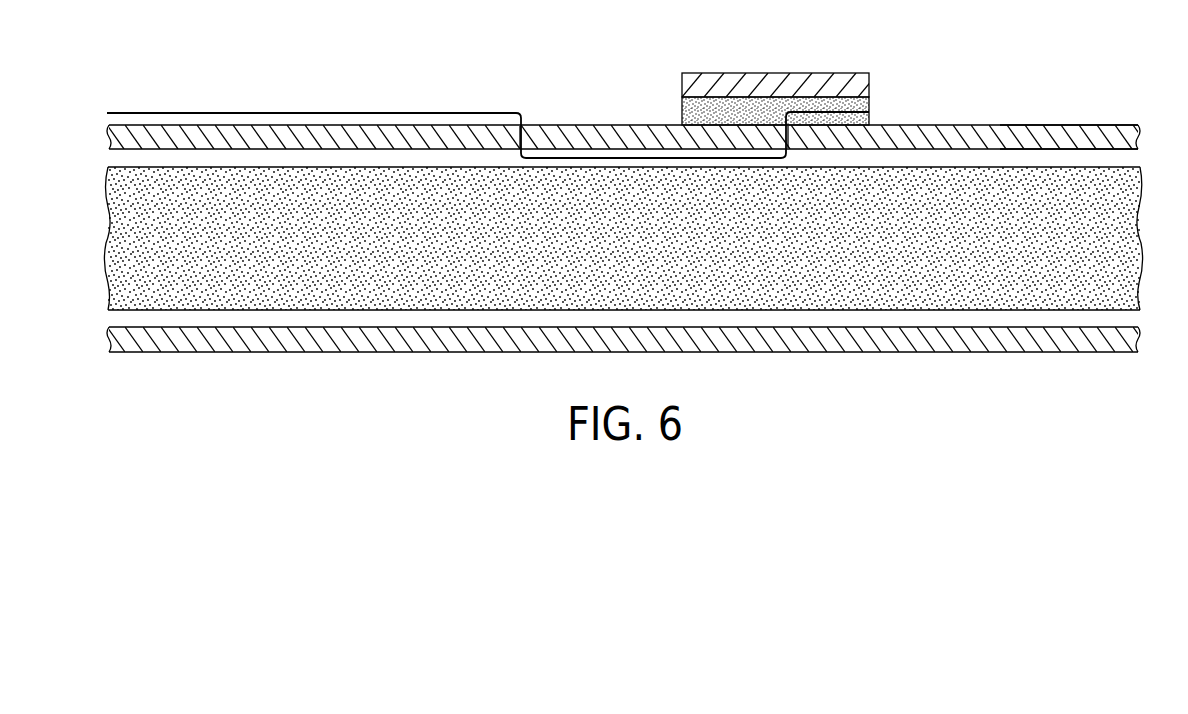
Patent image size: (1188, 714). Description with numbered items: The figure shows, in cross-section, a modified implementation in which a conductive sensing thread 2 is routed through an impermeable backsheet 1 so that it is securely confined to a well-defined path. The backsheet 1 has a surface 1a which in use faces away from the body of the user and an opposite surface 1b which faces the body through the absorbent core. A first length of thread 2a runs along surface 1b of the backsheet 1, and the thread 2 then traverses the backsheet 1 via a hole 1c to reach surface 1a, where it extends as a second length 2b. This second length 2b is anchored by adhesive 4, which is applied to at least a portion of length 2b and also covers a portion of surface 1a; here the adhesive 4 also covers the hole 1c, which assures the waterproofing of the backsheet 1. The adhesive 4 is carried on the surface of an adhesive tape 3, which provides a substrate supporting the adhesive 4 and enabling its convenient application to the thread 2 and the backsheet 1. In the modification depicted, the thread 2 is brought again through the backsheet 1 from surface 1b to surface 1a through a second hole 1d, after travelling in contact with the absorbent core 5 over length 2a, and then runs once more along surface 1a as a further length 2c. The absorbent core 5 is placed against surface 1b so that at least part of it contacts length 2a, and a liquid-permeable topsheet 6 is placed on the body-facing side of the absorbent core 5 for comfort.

The impermeable backsheet 1 is at (337, 140).
The surface 1a is at (1110, 124).
The surface 1b is at (1133, 149).
The hole 1c is at (791, 138).
The second hole 1d is at (522, 124).
The thread 2 is at (206, 112).
The first length of thread 2a is at (606, 157).
The second length 2b is at (846, 110).
The length 2c is at (446, 112).
The adhesive tape 3 is at (702, 82).
The adhesive 4 is at (682, 112).
The absorbent core 5 is at (1130, 233).
The topsheet 6 is at (1049, 340).